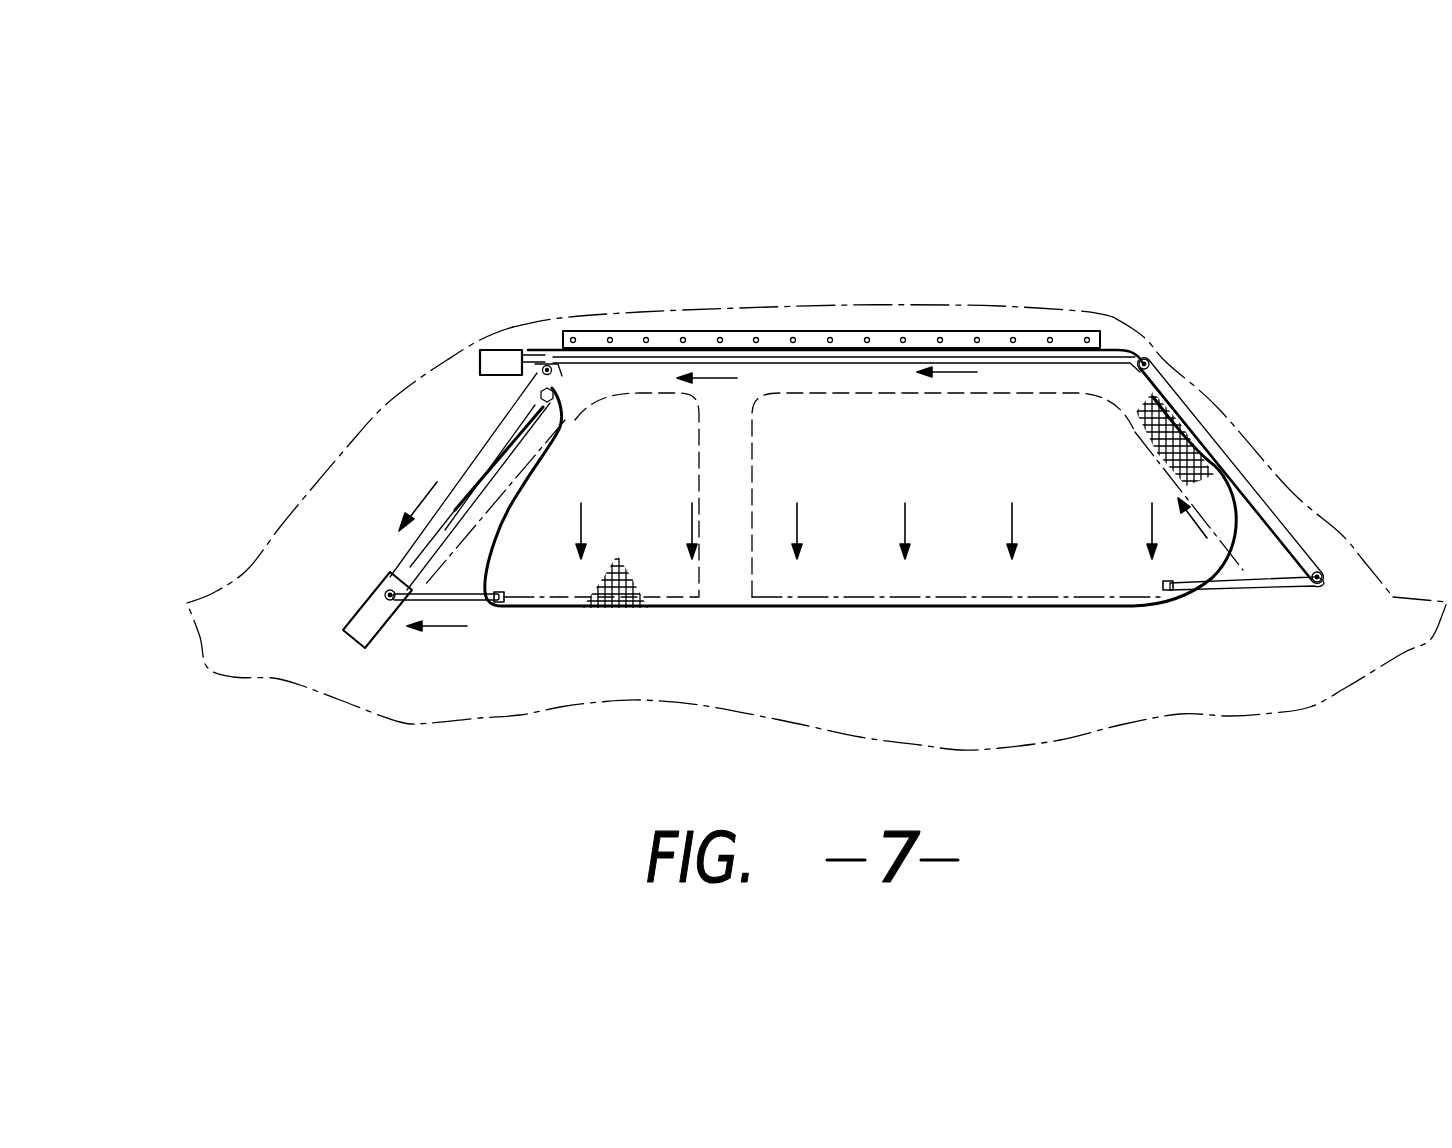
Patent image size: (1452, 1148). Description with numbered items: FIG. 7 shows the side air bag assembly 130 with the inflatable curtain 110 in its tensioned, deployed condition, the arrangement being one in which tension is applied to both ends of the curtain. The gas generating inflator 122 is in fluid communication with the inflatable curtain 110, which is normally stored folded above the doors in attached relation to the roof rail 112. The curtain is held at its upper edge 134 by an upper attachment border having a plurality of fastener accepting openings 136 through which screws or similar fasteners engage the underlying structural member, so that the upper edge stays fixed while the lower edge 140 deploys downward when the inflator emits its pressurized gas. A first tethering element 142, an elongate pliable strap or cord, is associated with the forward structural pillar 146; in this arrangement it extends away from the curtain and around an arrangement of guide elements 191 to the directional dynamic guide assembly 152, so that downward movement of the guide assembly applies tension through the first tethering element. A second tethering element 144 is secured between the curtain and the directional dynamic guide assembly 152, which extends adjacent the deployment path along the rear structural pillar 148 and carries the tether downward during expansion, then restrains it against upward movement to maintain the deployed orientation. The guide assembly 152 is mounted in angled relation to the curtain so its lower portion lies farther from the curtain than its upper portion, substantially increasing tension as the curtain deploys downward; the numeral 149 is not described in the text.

The side air bag assembly 130 is at (1312, 200).
The roof rail 112 is at (993, 305).
The forward structural pillar 146 is at (1172, 360).
The upper edge 134 is at (850, 338).
The fastener accepting openings 136 is at (647, 338).
The gas generating inflator 122 is at (490, 348).
The guide elements 191 is at (562, 366).
The inflatable curtain 110 is at (1231, 467).
The first tethering element 142 is at (1260, 590).
The second tethering element 144 is at (485, 602).
The directional dynamic guide assembly 152 is at (490, 455).
The lower edge 140 is at (873, 610).
The rear structural pillar 148 is at (573, 420).
The rear air duct 149 is at (753, 477).